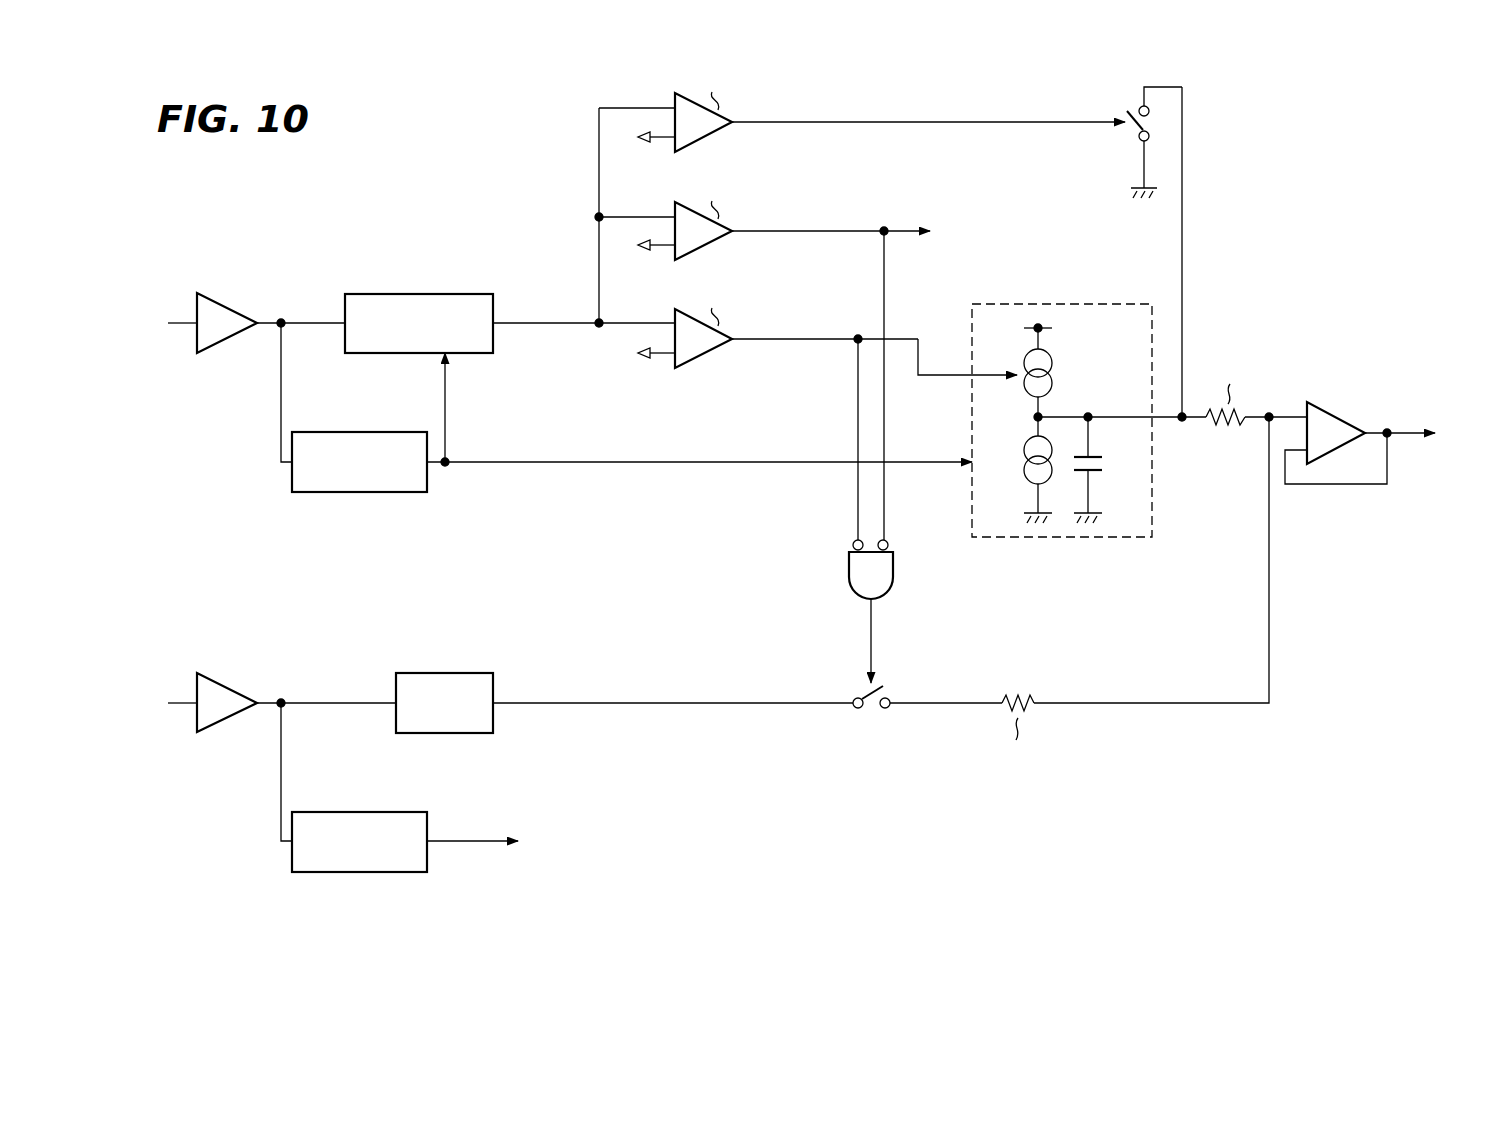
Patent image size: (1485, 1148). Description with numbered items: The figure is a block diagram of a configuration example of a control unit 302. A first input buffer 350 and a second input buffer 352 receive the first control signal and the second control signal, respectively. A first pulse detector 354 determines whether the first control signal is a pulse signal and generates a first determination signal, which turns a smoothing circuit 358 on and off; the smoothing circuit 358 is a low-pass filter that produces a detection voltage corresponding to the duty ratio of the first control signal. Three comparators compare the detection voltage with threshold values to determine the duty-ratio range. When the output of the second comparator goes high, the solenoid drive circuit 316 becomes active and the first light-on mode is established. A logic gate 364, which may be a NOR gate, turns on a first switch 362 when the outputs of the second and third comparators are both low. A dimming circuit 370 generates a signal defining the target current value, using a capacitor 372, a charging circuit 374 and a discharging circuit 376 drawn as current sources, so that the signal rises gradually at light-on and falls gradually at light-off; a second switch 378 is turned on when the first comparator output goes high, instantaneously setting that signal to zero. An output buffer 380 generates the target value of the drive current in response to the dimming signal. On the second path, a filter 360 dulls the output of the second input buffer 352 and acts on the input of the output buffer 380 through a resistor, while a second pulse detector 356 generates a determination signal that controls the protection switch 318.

The control unit 302 is at (803, 932).
The solenoid drive circuit 316 is at (934, 232).
The protection switch 318 is at (498, 842).
The first input buffer 350 is at (237, 305).
The second input buffer 352 is at (237, 685).
The first pulse detector 354 is at (368, 437).
The second pulse detector 356 is at (368, 817).
The smoothing circuit 358 is at (458, 300).
The filter 360 is at (458, 680).
The first switch 362 is at (868, 718).
The logic gate 364 is at (894, 570).
The dimming circuit 370 is at (1062, 451).
The capacitor 372 is at (1110, 462).
The charging circuit 374 is at (1060, 372).
The discharging circuit 376 is at (1022, 462).
The second switch 378 is at (1122, 142).
The output buffer 380 is at (1343, 412).